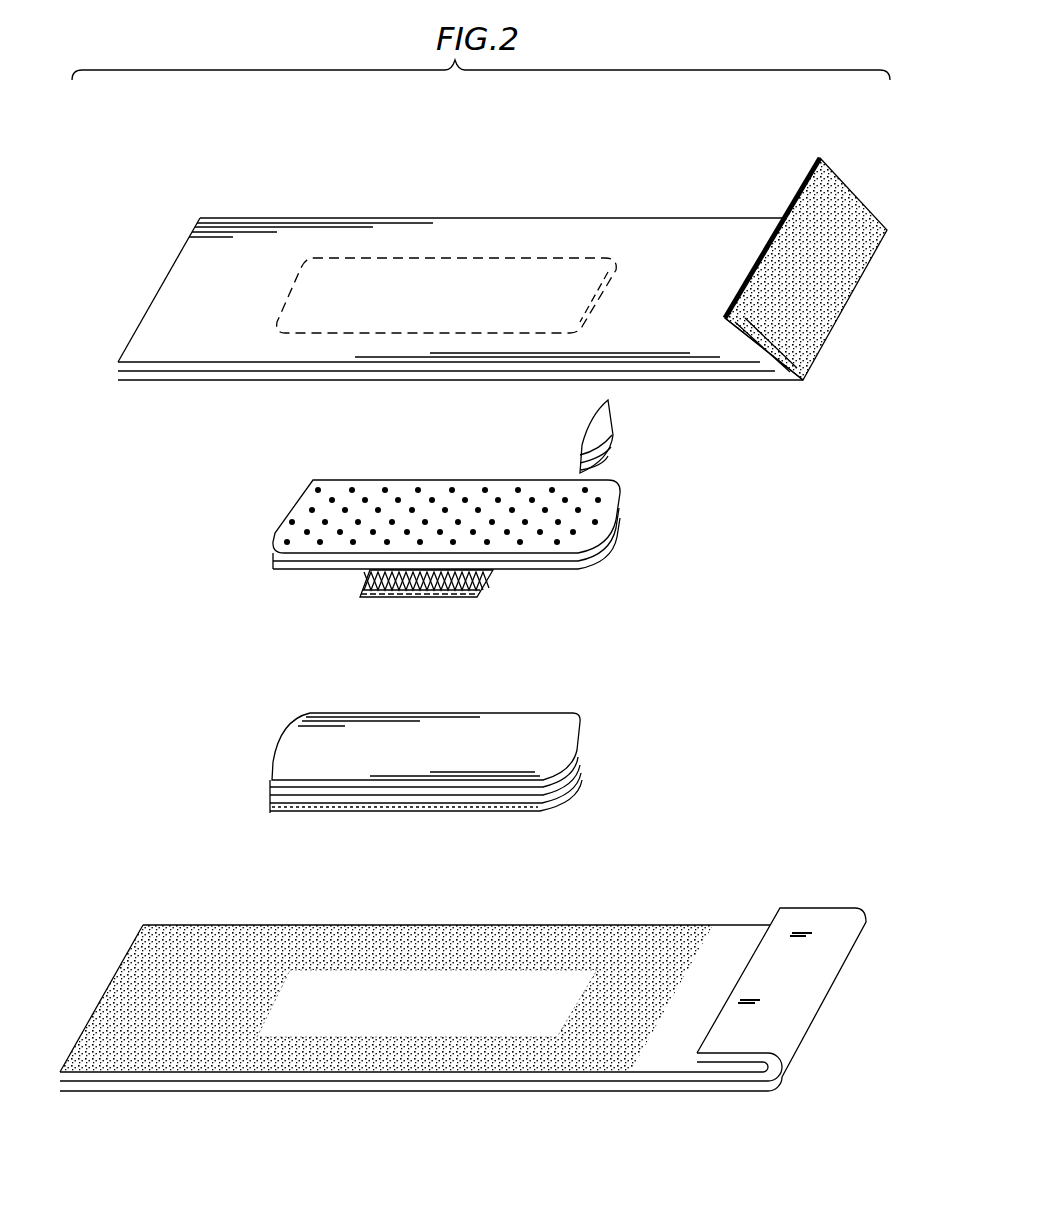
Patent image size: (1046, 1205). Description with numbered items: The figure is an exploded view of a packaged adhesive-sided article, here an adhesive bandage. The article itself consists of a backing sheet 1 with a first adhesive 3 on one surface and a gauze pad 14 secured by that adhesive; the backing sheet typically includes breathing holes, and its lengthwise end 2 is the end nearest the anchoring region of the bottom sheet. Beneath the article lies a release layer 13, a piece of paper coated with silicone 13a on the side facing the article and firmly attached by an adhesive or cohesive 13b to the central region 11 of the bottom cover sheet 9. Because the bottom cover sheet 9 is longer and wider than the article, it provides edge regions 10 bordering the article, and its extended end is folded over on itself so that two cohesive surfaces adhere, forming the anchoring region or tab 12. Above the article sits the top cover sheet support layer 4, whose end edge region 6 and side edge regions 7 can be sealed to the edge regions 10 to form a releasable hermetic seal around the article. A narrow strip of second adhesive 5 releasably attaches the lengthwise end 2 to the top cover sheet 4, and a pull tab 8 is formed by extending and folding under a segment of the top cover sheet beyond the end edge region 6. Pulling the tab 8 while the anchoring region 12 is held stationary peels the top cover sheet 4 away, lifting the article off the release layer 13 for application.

The backing sheet 1 is at (487, 540).
The lengthwise end 2 is at (598, 494).
The first adhesive 3 is at (590, 557).
The top cover sheet support layer 4 is at (690, 205).
The second adhesive component 5 is at (622, 430).
The end edge region 6 is at (190, 280).
The side edge region 7 is at (322, 348).
The pull tab 8 is at (833, 210).
The bottom cover sheet 9 is at (467, 1038).
The edge regions 10 is at (206, 1016).
The central region 11 is at (441, 1016).
The anchoring region 12 is at (785, 997).
The release layer 13 is at (482, 741).
The silicone coating 13a is at (553, 728).
The adhesive or cohesive 13b is at (562, 797).
The gauze pad 14 is at (487, 577).